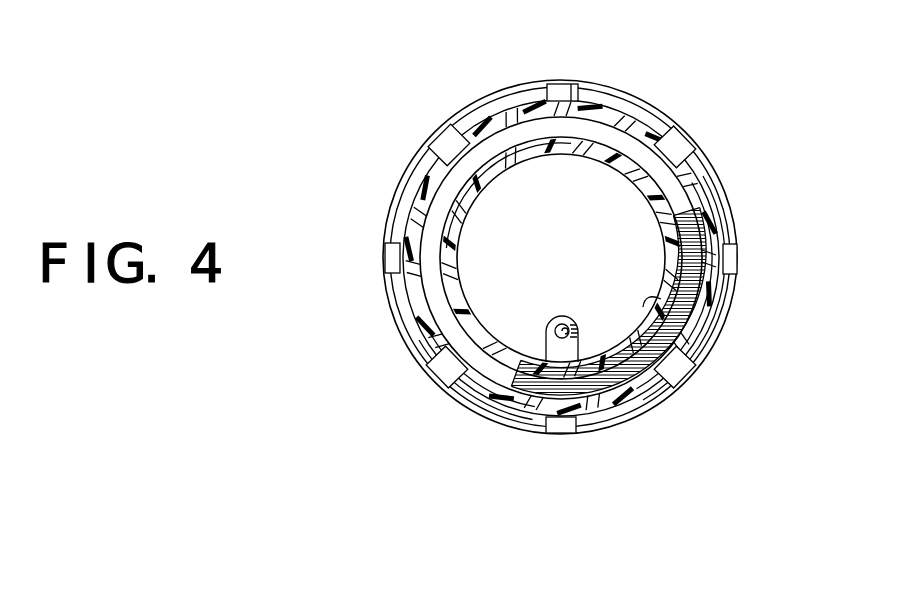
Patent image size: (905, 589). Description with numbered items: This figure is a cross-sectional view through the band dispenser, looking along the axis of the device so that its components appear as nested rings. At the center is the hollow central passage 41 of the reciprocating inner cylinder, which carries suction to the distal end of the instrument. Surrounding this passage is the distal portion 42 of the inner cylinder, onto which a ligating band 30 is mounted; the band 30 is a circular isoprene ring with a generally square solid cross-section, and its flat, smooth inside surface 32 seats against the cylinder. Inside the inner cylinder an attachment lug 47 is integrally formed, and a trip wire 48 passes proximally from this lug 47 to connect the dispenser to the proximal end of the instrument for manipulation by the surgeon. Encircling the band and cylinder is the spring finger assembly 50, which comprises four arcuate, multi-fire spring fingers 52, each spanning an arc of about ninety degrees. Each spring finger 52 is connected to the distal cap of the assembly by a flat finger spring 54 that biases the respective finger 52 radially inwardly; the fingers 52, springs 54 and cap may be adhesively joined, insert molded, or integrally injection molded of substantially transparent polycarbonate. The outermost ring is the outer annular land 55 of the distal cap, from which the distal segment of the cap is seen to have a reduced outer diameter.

The ligating band 30 is at (508, 139).
The inside surface 32 is at (614, 158).
The hollow central passage 41 is at (712, 308).
The distal portion 42 is at (468, 198).
The attachment lug 47 is at (547, 349).
The trip wire 48 is at (566, 331).
The spring finger assembly 50 is at (679, 404).
The spring finger 52 is at (507, 118).
The flat finger spring 54 is at (561, 84).
The outer annular land 55 is at (644, 118).